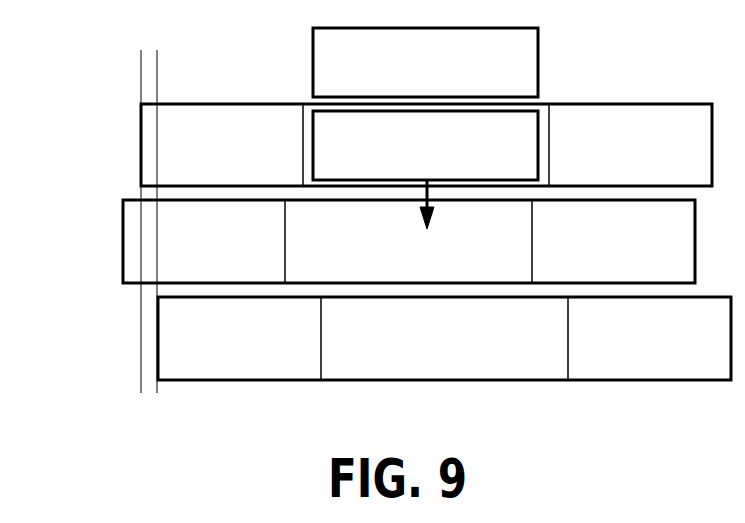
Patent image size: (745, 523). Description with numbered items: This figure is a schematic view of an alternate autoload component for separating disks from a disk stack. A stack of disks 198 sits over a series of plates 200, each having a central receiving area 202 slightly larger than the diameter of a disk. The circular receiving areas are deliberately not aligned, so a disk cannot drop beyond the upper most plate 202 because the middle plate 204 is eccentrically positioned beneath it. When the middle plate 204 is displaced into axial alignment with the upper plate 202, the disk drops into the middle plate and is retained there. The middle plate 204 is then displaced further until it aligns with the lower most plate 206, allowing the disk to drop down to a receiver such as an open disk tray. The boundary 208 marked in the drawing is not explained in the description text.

The stack of disks 198 is at (538, 58).
The plates 200 is at (538, 160).
The central receiving area 202 is at (141, 130).
The middle plate 204 is at (123, 208).
The lower most plate 206 is at (158, 350).
The divider / boundary 208 is at (286, 228).